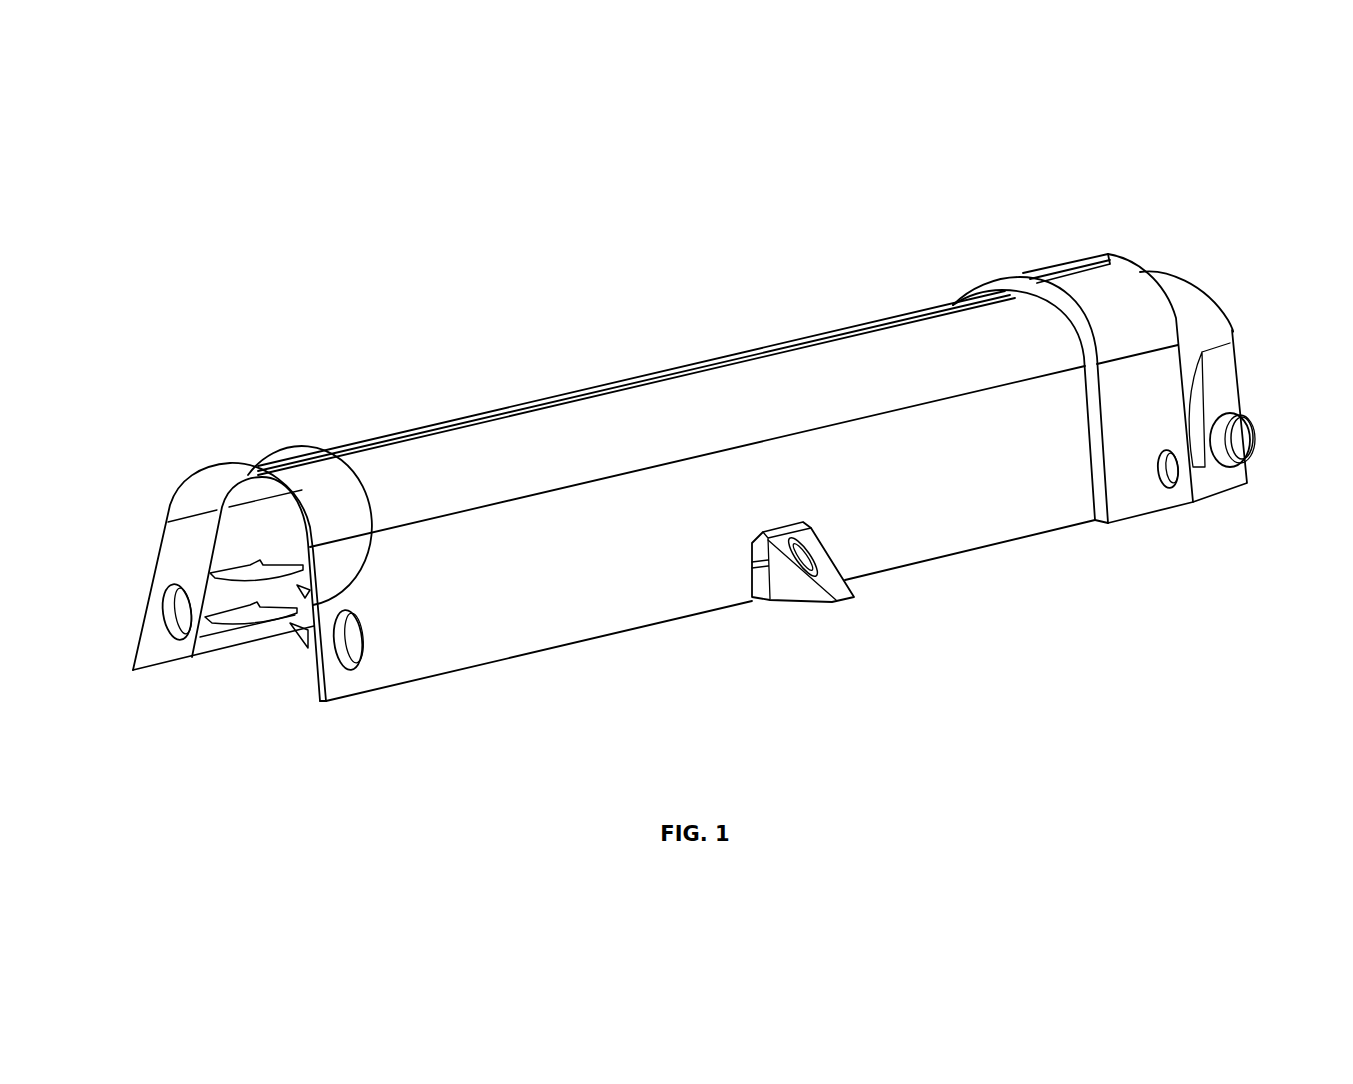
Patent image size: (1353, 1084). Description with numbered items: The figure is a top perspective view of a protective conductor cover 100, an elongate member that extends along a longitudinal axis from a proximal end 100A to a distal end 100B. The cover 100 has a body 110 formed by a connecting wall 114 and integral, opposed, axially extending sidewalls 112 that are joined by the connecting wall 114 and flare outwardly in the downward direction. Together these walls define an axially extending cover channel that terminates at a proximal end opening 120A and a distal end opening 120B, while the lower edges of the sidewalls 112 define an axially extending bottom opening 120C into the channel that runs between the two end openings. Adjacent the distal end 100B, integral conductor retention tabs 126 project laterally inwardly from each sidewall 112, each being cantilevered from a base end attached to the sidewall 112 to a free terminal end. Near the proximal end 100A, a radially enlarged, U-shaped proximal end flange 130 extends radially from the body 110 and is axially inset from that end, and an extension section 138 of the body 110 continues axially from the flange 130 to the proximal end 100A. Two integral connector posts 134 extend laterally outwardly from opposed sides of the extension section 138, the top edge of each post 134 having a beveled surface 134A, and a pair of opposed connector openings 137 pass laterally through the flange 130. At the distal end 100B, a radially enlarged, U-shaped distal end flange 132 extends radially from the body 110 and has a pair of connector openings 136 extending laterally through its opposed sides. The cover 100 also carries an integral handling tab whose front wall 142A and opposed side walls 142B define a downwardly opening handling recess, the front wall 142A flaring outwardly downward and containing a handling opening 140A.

The conductor cover 100 is at (705, 457).
The proximal end 100A is at (1147, 357).
The distal end 100B is at (256, 564).
The body 110 is at (684, 478).
The sidewalls 112 is at (937, 533).
The connecting wall 114 is at (651, 398).
The proximal end opening 120A is at (1147, 386).
The distal end opening 120B is at (231, 593).
The bottom opening 120C is at (298, 668).
The conductor retention tabs 126 is at (265, 575).
The proximal end flange 130 is at (1122, 275).
The distal end flange 132 is at (188, 540).
The connector posts 134 is at (1264, 477).
The beveled surface 134A is at (1250, 418).
The connector openings 136 is at (168, 613).
The connector openings 137 is at (1162, 474).
The extension section 138 is at (1240, 388).
The handling opening 140A is at (810, 569).
The front wall 142A is at (835, 590).
The side walls 142B is at (780, 592).